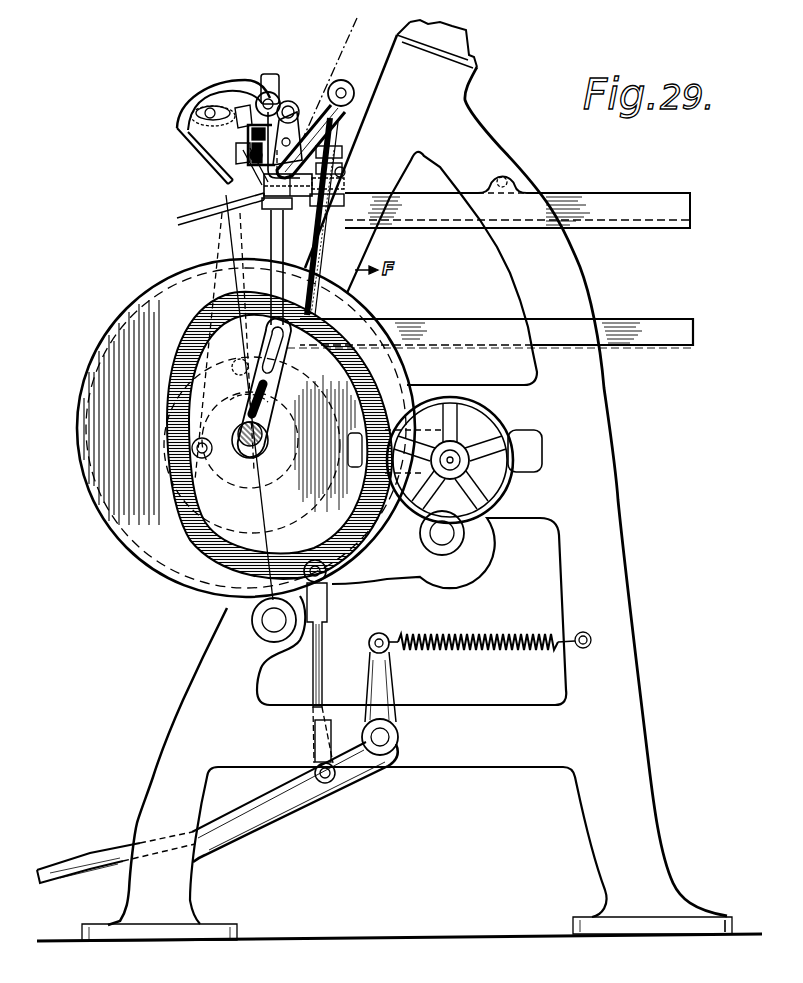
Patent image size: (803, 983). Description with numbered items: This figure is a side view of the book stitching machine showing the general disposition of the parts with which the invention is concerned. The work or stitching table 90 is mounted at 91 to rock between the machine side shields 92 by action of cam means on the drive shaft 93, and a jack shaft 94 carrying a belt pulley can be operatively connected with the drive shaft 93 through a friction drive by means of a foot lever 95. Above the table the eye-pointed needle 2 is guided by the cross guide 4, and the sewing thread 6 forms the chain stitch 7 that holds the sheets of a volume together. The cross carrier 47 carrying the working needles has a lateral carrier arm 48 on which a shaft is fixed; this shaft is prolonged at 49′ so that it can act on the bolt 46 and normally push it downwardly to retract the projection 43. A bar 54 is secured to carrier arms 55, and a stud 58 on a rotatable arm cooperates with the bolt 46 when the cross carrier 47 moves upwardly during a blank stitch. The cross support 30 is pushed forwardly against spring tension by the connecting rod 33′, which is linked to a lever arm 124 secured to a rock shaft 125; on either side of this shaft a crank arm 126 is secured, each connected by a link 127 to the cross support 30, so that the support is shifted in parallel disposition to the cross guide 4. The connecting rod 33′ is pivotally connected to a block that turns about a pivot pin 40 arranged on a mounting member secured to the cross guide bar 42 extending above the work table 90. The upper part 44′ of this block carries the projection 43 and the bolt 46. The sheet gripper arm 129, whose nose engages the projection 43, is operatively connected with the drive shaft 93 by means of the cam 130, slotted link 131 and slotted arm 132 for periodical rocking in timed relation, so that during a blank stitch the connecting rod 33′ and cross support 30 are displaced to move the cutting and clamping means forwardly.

The eye-pointed needle 2 is at (288, 185).
The cross guide 4 is at (268, 212).
The sewing thread 6 is at (349, 44).
The chain stitch 7 is at (270, 233).
The cross support 30 is at (331, 216).
The connecting rod 33′ is at (342, 176).
The pivot pin 40 is at (258, 176).
The cross guide bar 42 is at (255, 207).
The projection 43 is at (240, 157).
The upper part of block 44′ is at (250, 167).
The bolt 46 is at (262, 125).
The cross carrier 47 is at (340, 138).
The carrier arm 48 is at (268, 90).
The prolonged shaft portion 49′ is at (287, 108).
The bar 54 is at (298, 122).
The carrier arm 55 is at (345, 120).
The stud 58 is at (287, 138).
The work table 90 is at (177, 221).
The table mounting 91 is at (273, 623).
The machine side shields 92 is at (595, 392).
The drive shaft 93 is at (234, 488).
The jack shaft 94 is at (507, 437).
The foot lever 95 is at (88, 861).
The lever arm 124 is at (344, 185).
The rock shaft 125 is at (343, 177).
The crank arm 126 is at (344, 195).
The link 127 is at (346, 205).
The sheet gripper arm 129 is at (192, 124).
The cam 130 is at (205, 400).
The slotted link 131 is at (243, 140).
The slotted arm 132 is at (205, 128).